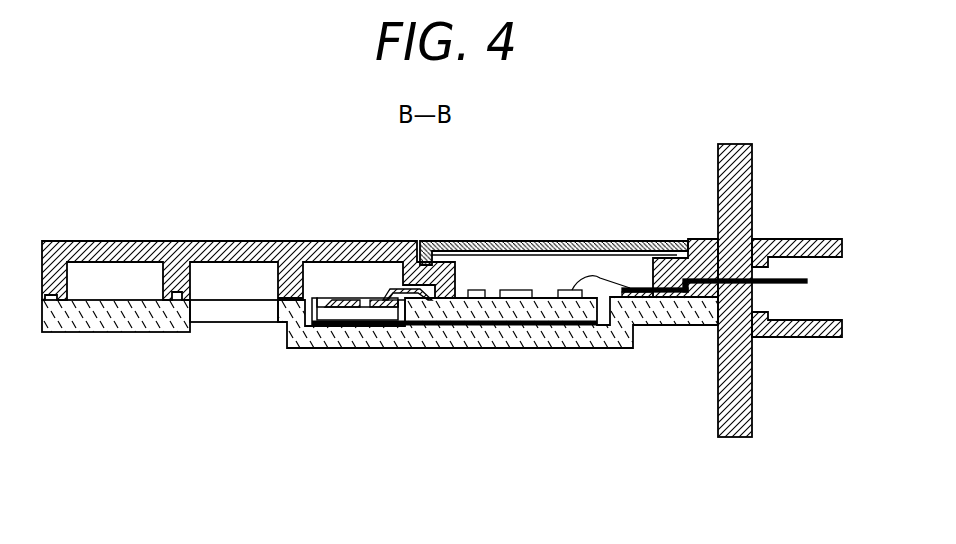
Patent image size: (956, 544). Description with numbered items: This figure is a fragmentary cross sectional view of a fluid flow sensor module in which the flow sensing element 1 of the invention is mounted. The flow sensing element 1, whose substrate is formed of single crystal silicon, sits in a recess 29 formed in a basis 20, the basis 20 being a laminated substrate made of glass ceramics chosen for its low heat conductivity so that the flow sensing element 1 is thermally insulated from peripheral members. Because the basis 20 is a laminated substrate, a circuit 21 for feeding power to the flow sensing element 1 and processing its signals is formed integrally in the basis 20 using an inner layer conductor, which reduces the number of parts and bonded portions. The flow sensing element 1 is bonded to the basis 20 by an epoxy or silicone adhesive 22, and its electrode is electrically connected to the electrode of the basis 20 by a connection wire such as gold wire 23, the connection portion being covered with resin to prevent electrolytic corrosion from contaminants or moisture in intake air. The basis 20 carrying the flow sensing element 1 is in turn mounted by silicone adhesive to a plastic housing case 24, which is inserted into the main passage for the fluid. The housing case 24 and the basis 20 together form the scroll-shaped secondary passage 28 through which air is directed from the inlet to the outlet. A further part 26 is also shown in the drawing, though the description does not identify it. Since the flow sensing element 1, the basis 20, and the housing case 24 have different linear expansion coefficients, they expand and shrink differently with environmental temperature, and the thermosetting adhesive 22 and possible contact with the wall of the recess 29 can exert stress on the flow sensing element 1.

The flow sensing element 1 is at (324, 297).
The basis 20 is at (414, 308).
The circuit 21 is at (520, 300).
The adhesive 22 is at (377, 303).
The gold wire 23 is at (395, 288).
The housing case 24 is at (443, 248).
The housing 26 is at (137, 280).
The secondary passage 28 is at (225, 283).
The recess 29 is at (345, 308).